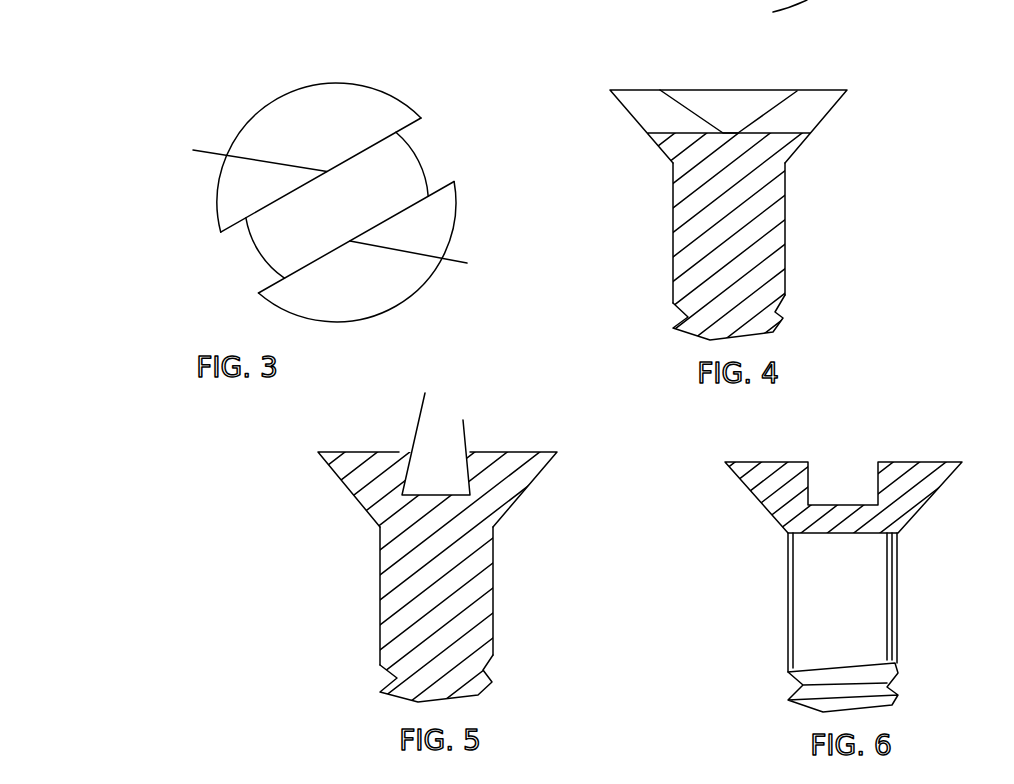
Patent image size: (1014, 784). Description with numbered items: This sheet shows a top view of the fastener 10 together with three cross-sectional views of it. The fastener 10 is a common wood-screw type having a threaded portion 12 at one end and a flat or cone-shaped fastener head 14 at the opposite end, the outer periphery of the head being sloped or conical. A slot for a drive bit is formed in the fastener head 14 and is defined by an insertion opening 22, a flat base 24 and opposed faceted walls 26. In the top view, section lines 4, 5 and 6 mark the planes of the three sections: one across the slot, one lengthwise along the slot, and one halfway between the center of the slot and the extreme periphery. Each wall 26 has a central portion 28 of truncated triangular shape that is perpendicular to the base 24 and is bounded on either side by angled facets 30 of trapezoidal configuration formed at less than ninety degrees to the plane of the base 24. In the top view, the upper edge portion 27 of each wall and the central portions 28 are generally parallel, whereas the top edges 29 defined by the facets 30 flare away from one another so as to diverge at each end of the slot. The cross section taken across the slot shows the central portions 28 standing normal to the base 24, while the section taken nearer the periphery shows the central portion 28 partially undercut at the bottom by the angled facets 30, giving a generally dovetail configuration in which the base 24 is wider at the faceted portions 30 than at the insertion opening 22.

In FIG. 3, the fastener 10 is at (373, 176).
In FIG. 4, the fastener 10 is at (731, 251).
In FIG. 5, the fastener 10 is at (425, 510).
In FIG. 6, the fastener 10 is at (838, 501).
In FIG. 4, the threaded portion 12 is at (676, 322).
In FIG. 5, the threaded portion 12 is at (387, 683).
In FIG. 6, the threaded portion 12 is at (892, 682).
In FIG. 3, the fastener head 14 is at (359, 86).
In FIG. 4, the fastener head 14 is at (731, 105).
In FIG. 5, the fastener head 14 is at (446, 478).
In FIG. 6, the fastener head 14 is at (849, 523).
In FIG. 3, the insertion opening 22 is at (410, 161).
In FIG. 4, the insertion opening 22 is at (708, 105).
In FIG. 5, the insertion opening 22 is at (480, 478).
In FIG. 3, the base 24 is at (477, 217).
In FIG. 4, the base 24 is at (724, 134).
In FIG. 5, the base 24 is at (438, 497).
In FIG. 6, the base 24 is at (840, 505).
In FIG. 3, the walls 26 is at (313, 181).
In FIG. 4, the walls 26 is at (681, 85).
In FIG. 3, the upper edge portion 27 is at (332, 207).
In FIG. 4, the upper edge portion 27 is at (723, 90).
In FIG. 4, the central portion 28 is at (730, 107).
In FIG. 5, the central portion 28 is at (425, 393).
In FIG. 3, the top edges 29 is at (397, 132).
In FIG. 4, the top edges 29 is at (640, 90).
In FIG. 4, the facets 30 is at (646, 118).
In FIG. 6, the facets 30 is at (776, 524).
In FIG. 3, the section line 4- 4 is at (453, 140).
In FIG. 3, the section line 5- 5 is at (270, 98).
In FIG. 3, the section line 6- 6 is at (217, 128).